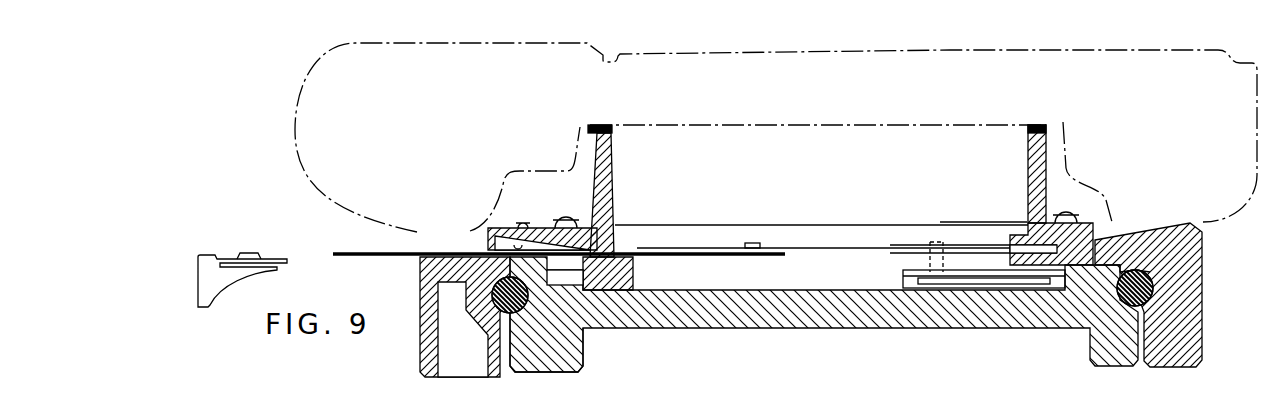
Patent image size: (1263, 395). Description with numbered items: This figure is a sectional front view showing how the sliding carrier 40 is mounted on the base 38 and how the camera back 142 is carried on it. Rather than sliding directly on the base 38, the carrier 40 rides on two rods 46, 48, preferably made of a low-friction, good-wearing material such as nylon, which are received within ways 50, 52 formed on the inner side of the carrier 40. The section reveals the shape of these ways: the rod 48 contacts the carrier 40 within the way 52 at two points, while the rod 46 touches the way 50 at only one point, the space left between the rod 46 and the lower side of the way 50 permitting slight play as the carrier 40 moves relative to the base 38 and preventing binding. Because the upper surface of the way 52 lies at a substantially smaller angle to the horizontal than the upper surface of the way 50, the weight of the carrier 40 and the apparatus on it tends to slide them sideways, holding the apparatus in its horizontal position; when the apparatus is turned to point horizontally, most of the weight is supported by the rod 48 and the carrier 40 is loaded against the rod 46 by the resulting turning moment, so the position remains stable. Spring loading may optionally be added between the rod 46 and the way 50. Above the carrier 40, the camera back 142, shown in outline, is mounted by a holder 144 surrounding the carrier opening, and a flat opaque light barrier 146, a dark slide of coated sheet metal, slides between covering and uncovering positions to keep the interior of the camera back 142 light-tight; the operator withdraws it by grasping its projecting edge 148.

The camera back 142 is at (1122, 62).
The holder 144 is at (610, 165).
The light barrier 146 is at (365, 258).
The projecting edge 148 is at (200, 272).
The way 50 is at (500, 280).
The rod 46 is at (513, 313).
The way 52 is at (1145, 278).
The rod 48 is at (1143, 297).
The base 38 is at (1095, 348).
The carrier 40 is at (1193, 347).